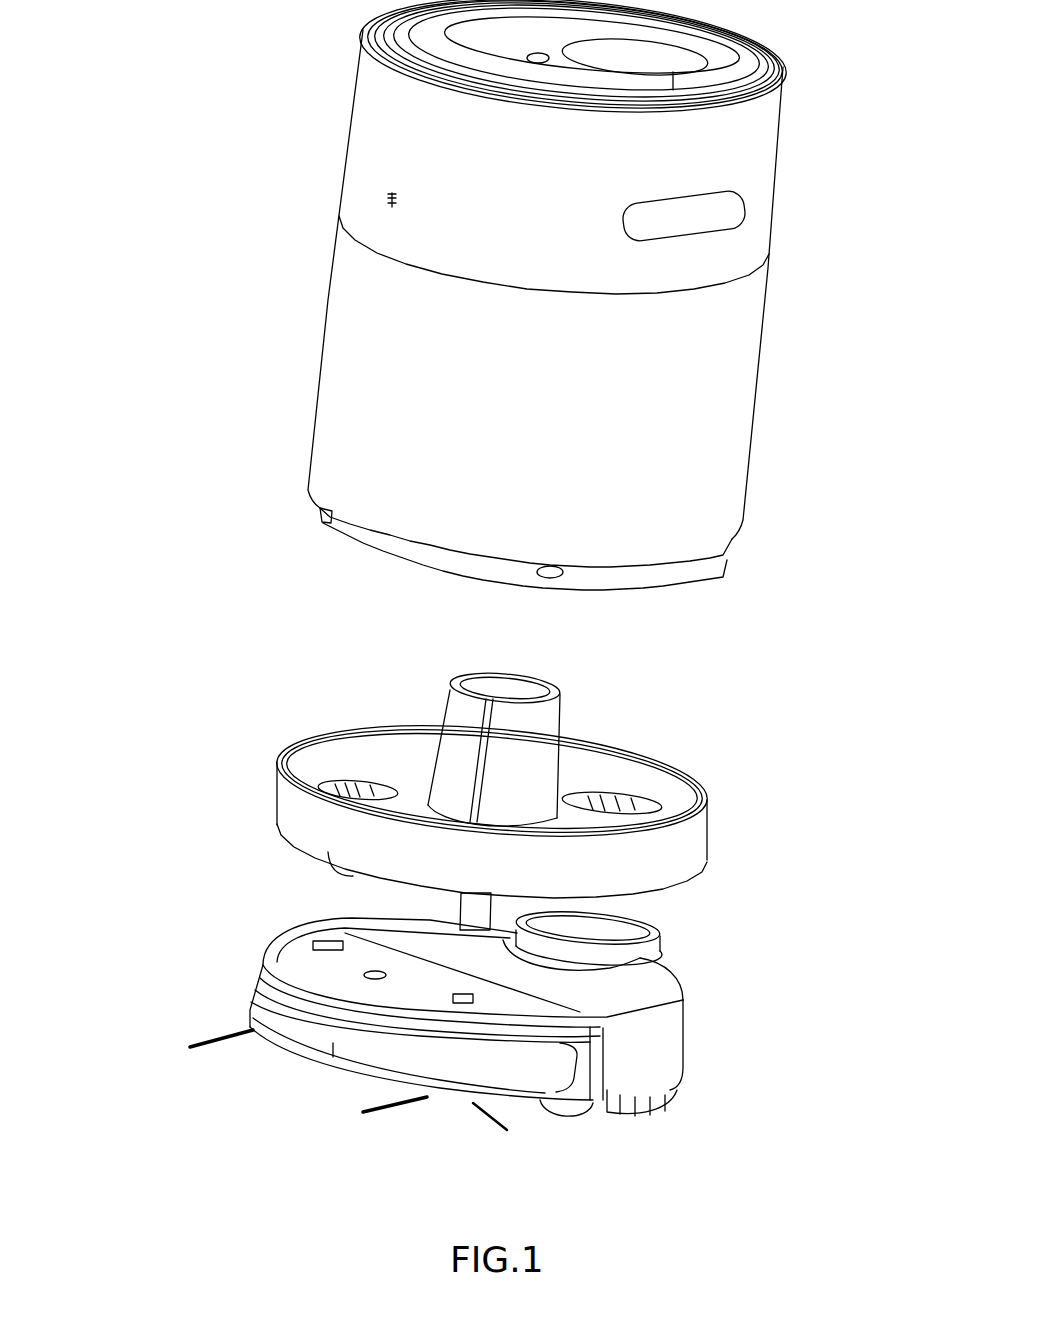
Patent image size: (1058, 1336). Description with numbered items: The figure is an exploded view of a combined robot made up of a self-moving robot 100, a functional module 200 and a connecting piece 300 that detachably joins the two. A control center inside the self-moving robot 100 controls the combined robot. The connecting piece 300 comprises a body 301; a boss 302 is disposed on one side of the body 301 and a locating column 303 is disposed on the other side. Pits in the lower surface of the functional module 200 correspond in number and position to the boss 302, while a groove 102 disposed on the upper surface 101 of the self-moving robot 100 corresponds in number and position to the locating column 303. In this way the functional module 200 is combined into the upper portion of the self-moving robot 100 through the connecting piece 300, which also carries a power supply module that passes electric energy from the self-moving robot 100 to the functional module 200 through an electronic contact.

The self-moving robot 100 is at (472, 1052).
The upper surface 101 is at (648, 997).
The groove 102 is at (327, 943).
The functional module 200 is at (380, 328).
The connecting piece 300 is at (473, 766).
The body 301 is at (675, 857).
The boss 302 is at (528, 738).
The locating column 303 is at (485, 893).